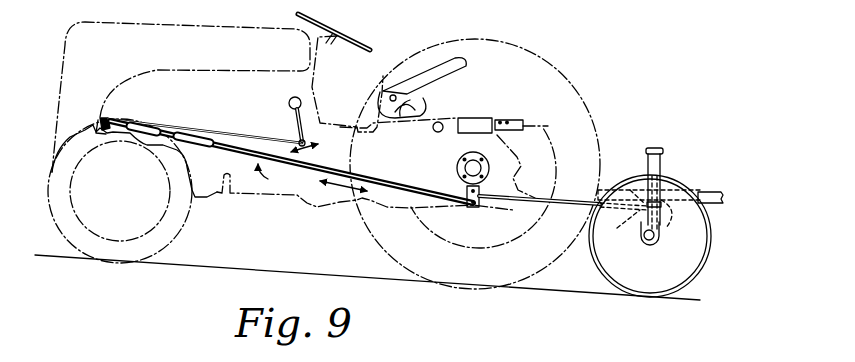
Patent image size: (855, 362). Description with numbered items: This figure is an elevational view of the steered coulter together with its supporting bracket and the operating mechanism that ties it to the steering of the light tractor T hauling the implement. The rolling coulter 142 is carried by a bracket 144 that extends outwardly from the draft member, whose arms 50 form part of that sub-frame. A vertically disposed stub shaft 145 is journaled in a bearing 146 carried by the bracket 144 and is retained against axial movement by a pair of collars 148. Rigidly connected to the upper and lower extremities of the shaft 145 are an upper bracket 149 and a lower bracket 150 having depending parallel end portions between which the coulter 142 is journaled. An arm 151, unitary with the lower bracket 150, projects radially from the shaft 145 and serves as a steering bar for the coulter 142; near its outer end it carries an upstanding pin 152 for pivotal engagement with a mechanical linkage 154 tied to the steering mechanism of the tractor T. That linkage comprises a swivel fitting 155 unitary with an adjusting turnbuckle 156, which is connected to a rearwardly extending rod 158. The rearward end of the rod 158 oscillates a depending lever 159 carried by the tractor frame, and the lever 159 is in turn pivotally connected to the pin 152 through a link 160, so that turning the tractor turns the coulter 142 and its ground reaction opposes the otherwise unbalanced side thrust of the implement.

The tractor T is at (368, 31).
The arms 50 is at (714, 197).
The rolling coulter 142 is at (683, 282).
The bracket 144 is at (693, 190).
The stub shaft 145 is at (654, 149).
The bearing 146 is at (637, 181).
The collars 148 is at (638, 177).
The upper bracket 149 is at (661, 163).
The lower bracket 150 is at (657, 241).
The arm 151 is at (635, 220).
The upstanding pin 152 is at (661, 208).
The mechanical linkage 154 is at (312, 178).
The swivel fitting 155 is at (108, 120).
The adjusting turnbuckle 156 is at (157, 128).
The rod 158 is at (333, 172).
The depending lever 159 is at (458, 186).
The link 160 is at (558, 206).